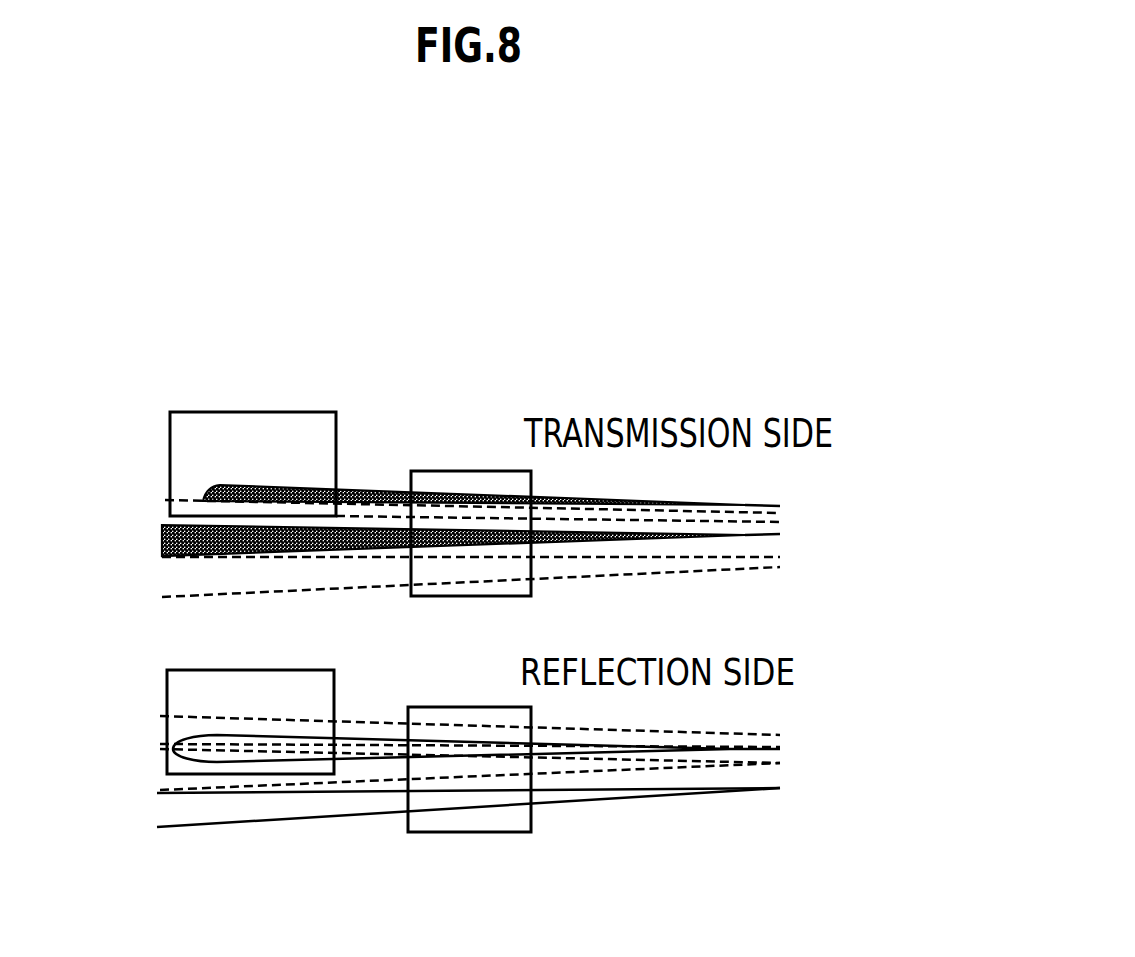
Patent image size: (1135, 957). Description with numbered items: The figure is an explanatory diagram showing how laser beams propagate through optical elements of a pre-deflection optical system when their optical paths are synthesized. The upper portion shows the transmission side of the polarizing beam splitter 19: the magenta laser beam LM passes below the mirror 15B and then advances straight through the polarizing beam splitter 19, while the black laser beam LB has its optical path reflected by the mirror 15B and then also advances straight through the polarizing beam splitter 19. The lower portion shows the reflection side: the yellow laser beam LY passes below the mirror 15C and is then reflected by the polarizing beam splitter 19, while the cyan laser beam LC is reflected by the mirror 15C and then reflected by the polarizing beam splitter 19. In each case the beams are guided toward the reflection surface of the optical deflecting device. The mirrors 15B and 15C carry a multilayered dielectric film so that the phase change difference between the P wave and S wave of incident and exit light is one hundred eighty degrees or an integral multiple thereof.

The mirror 15B is at (257, 412).
The mirror 15C is at (196, 670).
The polarizing beam splitter 19 is at (437, 707).
The black laser beam LB is at (380, 487).
The magenta laser beam LM is at (162, 557).
The cyan laser beam LC is at (372, 744).
The yellow laser beam LY is at (283, 822).